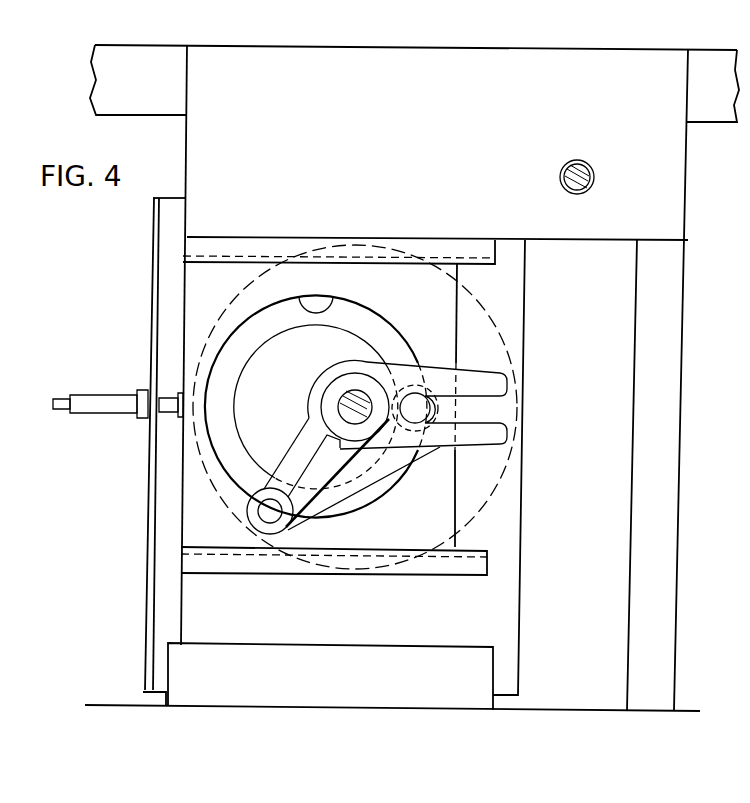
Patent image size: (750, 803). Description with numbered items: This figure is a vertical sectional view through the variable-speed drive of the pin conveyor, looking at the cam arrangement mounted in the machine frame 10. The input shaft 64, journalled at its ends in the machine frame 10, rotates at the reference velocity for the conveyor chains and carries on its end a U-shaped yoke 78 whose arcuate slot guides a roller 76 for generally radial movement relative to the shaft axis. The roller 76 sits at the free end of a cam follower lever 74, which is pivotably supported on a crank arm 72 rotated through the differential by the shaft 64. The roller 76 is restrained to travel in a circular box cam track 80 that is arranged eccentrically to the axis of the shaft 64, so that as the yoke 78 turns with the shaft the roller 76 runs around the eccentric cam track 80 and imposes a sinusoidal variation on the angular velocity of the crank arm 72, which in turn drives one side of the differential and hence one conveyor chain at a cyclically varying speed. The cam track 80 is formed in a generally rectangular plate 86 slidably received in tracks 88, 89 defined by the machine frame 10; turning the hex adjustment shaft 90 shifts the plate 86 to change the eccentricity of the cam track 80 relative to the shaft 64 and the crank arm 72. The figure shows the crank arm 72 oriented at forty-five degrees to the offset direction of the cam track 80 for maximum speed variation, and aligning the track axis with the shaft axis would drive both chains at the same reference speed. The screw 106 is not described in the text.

The machine frame 10 is at (178, 197).
The shaft 64 is at (352, 392).
The crank arm 72 is at (298, 434).
The cam follower lever 74 is at (381, 483).
The roller 76 is at (438, 403).
The U-shaped yoke 78 is at (470, 447).
The box cam track 80 is at (333, 302).
The plate 86 is at (467, 293).
The track 88 is at (199, 256).
The track 89 is at (217, 560).
The adjustment shaft 90 is at (91, 414).
The screw 106 is at (593, 178).